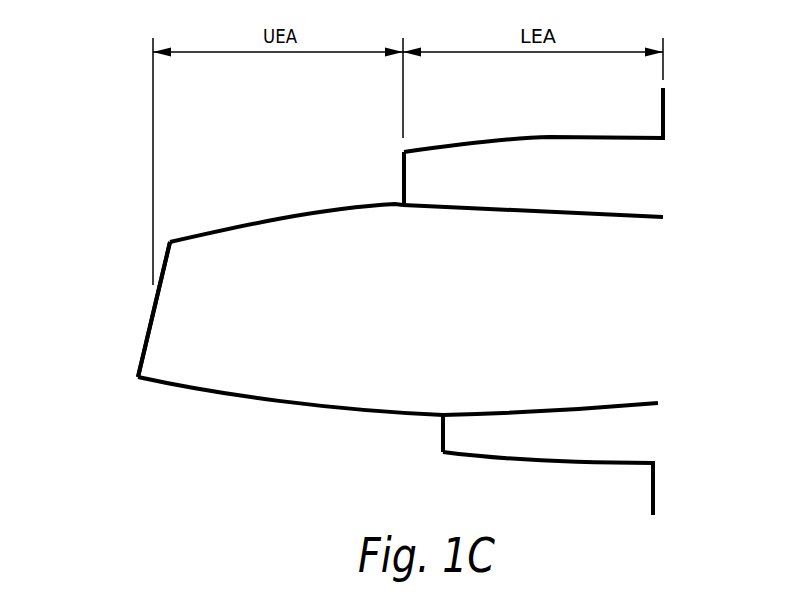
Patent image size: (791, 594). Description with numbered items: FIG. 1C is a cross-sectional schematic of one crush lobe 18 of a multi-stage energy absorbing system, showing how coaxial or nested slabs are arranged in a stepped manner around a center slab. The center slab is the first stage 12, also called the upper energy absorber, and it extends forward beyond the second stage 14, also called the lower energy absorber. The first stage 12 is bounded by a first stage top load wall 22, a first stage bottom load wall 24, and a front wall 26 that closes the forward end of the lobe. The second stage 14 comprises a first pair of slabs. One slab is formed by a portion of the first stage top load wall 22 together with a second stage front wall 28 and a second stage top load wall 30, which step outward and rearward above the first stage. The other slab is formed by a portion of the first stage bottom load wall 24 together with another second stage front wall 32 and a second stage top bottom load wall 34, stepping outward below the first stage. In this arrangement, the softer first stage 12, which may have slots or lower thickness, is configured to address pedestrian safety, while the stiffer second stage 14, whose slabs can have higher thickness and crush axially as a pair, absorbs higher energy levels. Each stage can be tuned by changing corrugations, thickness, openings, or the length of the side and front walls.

The first stage 12 is at (144, 300).
The second stage 14 is at (392, 153).
The crush lobe 18 is at (191, 431).
The first stage top load wall 22 is at (637, 214).
The first stage bottom load wall 24 is at (622, 408).
The front wall 26 is at (145, 335).
The second stage front wall 28 is at (402, 180).
The second stage top load wall 30 is at (543, 138).
The second stage front wall 32 is at (440, 432).
The second stage top bottom load wall 34 is at (535, 463).